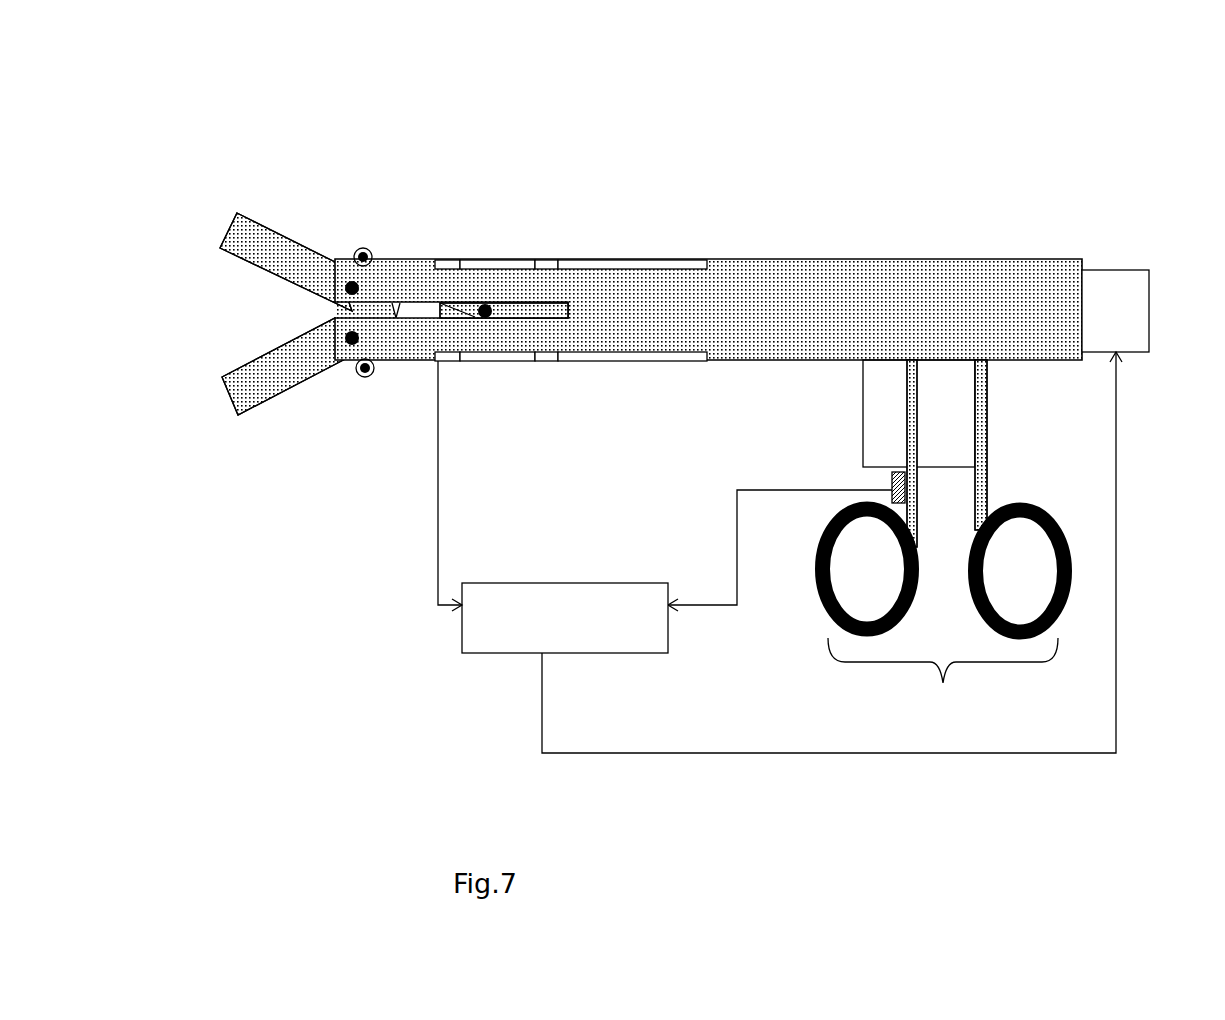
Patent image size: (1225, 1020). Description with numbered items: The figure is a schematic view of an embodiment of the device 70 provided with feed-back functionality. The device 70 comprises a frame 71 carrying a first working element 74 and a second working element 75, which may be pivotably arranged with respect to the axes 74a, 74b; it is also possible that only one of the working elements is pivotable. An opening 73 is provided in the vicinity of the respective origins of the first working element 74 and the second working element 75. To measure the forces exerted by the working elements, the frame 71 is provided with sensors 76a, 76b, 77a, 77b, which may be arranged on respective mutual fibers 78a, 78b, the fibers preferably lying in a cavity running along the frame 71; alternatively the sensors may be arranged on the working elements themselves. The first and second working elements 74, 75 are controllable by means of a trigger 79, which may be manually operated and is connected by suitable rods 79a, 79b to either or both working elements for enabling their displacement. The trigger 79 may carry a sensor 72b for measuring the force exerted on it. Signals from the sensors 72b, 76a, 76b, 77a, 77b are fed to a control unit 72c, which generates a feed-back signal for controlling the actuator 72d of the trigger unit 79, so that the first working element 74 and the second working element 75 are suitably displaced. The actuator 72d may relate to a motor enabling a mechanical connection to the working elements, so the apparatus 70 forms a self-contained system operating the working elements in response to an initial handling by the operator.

The device 70 is at (405, 100).
The frame 71 is at (932, 282).
The sensor 72b is at (892, 477).
The control unit 72c is at (520, 582).
The actuator 72d is at (1115, 270).
The opening 73 is at (417, 305).
The first working element 74 is at (228, 240).
The axis 74a is at (347, 283).
The axis 74b is at (352, 343).
The second working element 75 is at (236, 411).
The sensor 76a is at (447, 260).
The sensor 76b is at (553, 260).
The sensor 77a is at (447, 362).
The sensor 77b is at (553, 362).
The fiber 78a is at (703, 260).
The fiber 78b is at (703, 362).
The trigger 79 is at (940, 677).
The rod 79a is at (737, 303).
The rod 79b is at (908, 408).